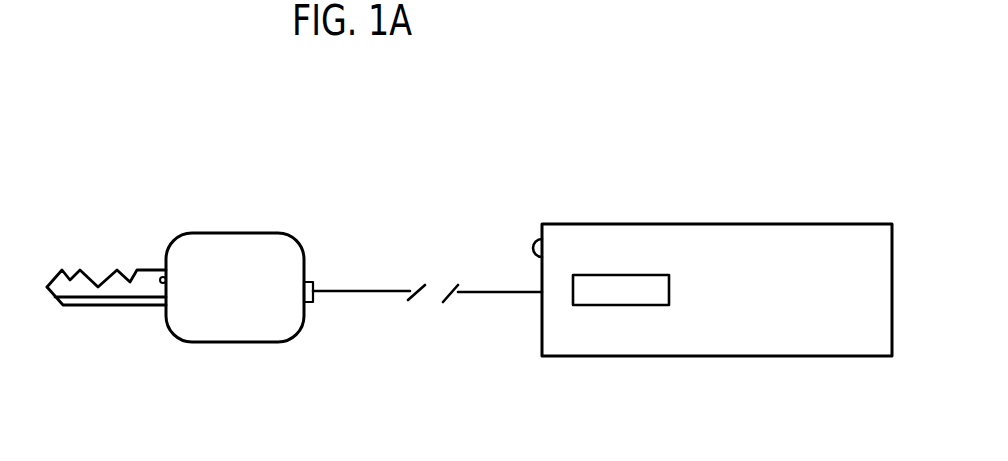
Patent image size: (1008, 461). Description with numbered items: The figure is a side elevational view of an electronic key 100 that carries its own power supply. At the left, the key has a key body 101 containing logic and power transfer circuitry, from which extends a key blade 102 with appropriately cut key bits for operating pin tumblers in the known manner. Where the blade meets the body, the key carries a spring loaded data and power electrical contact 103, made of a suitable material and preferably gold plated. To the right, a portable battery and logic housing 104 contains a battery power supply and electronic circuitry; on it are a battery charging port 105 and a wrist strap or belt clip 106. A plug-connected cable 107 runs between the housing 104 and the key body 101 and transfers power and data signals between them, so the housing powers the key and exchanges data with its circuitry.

The electronic key 100 is at (323, 138).
The key body 101 is at (255, 247).
The key blade 102 is at (52, 306).
The spring loaded data and power electrical contact 103 is at (161, 277).
The portable battery and logic housing 104 is at (775, 301).
The battery charging port 105 is at (538, 240).
The wrist strap or belt clip 106 is at (622, 291).
The plug-connected cable 107 is at (492, 294).